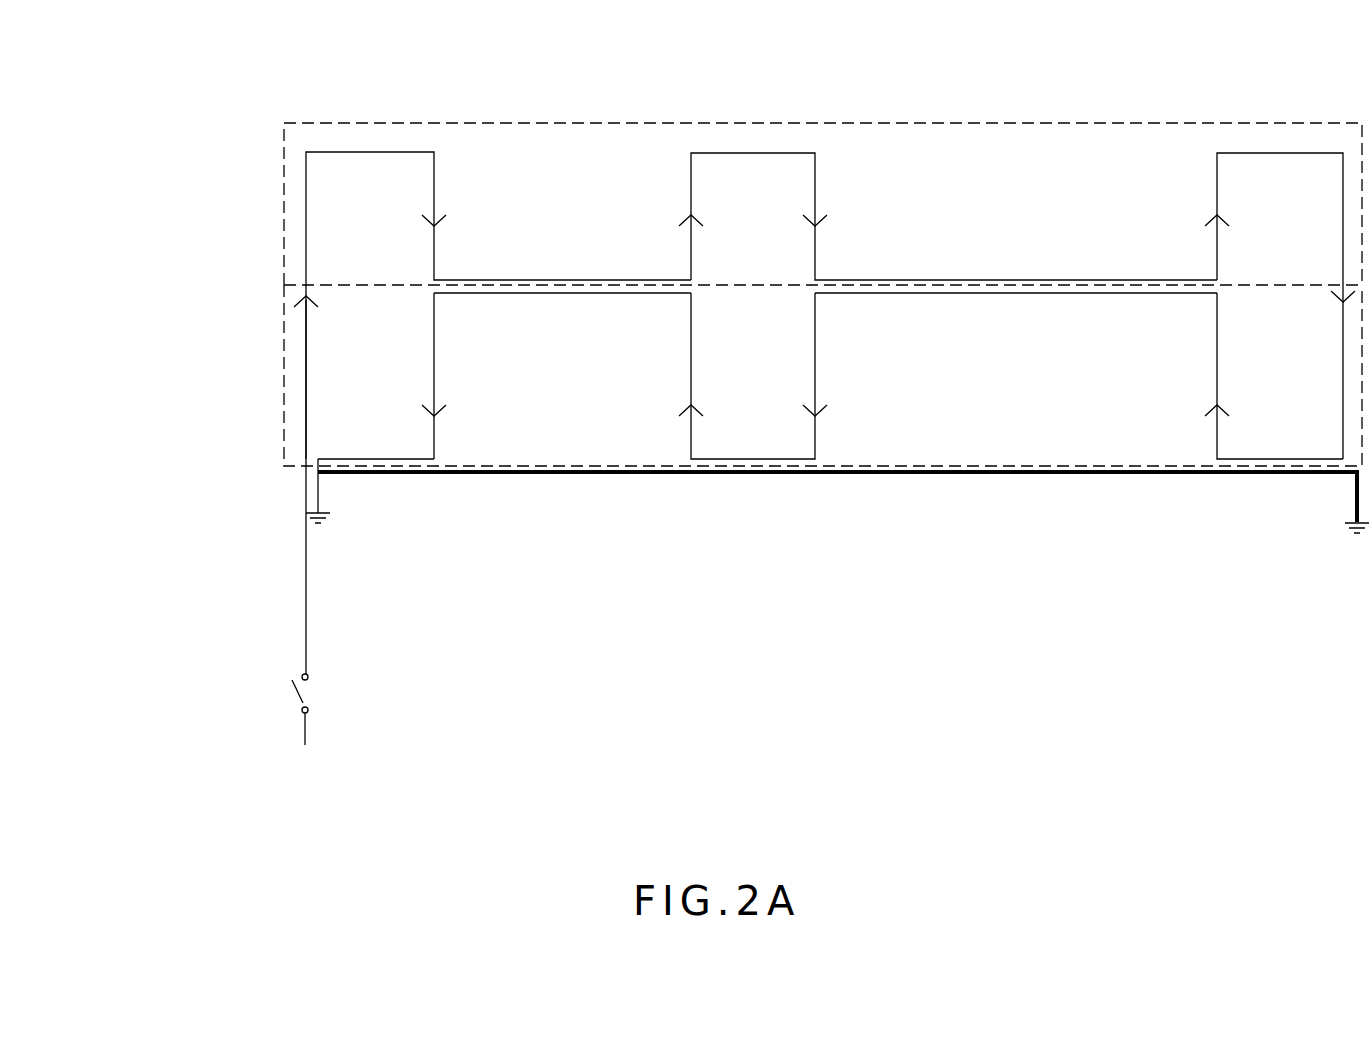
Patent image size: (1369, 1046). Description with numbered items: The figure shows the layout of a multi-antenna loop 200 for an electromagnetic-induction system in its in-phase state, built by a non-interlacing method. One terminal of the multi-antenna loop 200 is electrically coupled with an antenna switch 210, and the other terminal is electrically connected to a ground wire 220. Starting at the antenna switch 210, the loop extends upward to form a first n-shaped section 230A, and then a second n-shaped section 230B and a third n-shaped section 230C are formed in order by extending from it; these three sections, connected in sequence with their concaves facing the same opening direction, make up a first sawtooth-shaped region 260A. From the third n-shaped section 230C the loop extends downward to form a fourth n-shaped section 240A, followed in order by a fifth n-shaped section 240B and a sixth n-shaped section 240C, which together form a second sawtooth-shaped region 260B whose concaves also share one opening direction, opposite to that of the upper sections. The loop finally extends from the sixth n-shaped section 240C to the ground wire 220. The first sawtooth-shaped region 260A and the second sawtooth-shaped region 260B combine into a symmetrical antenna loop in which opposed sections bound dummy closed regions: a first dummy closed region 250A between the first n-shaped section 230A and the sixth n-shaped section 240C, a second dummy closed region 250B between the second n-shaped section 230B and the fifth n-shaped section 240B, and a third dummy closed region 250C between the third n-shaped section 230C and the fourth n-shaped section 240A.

The multi-antenna loop 200 is at (305, 550).
The antenna switch 210 is at (305, 730).
The ground wire 220 is at (995, 474).
The first n-shaped section 230A is at (345, 213).
The second n-shaped section 230B is at (753, 175).
The third n-shaped section 230C is at (1272, 170).
The fourth n-shaped section 240A is at (1272, 437).
The fifth n-shaped section 240B is at (753, 432).
The sixth n-shaped section 240C is at (345, 395).
The first dummy closed region 250A is at (389, 376).
The second dummy closed region 250B is at (607, 311).
The third dummy closed region 250C is at (1067, 311).
The first sawtooth-shaped region 260A is at (532, 123).
The second sawtooth-shaped region 260B is at (615, 468).